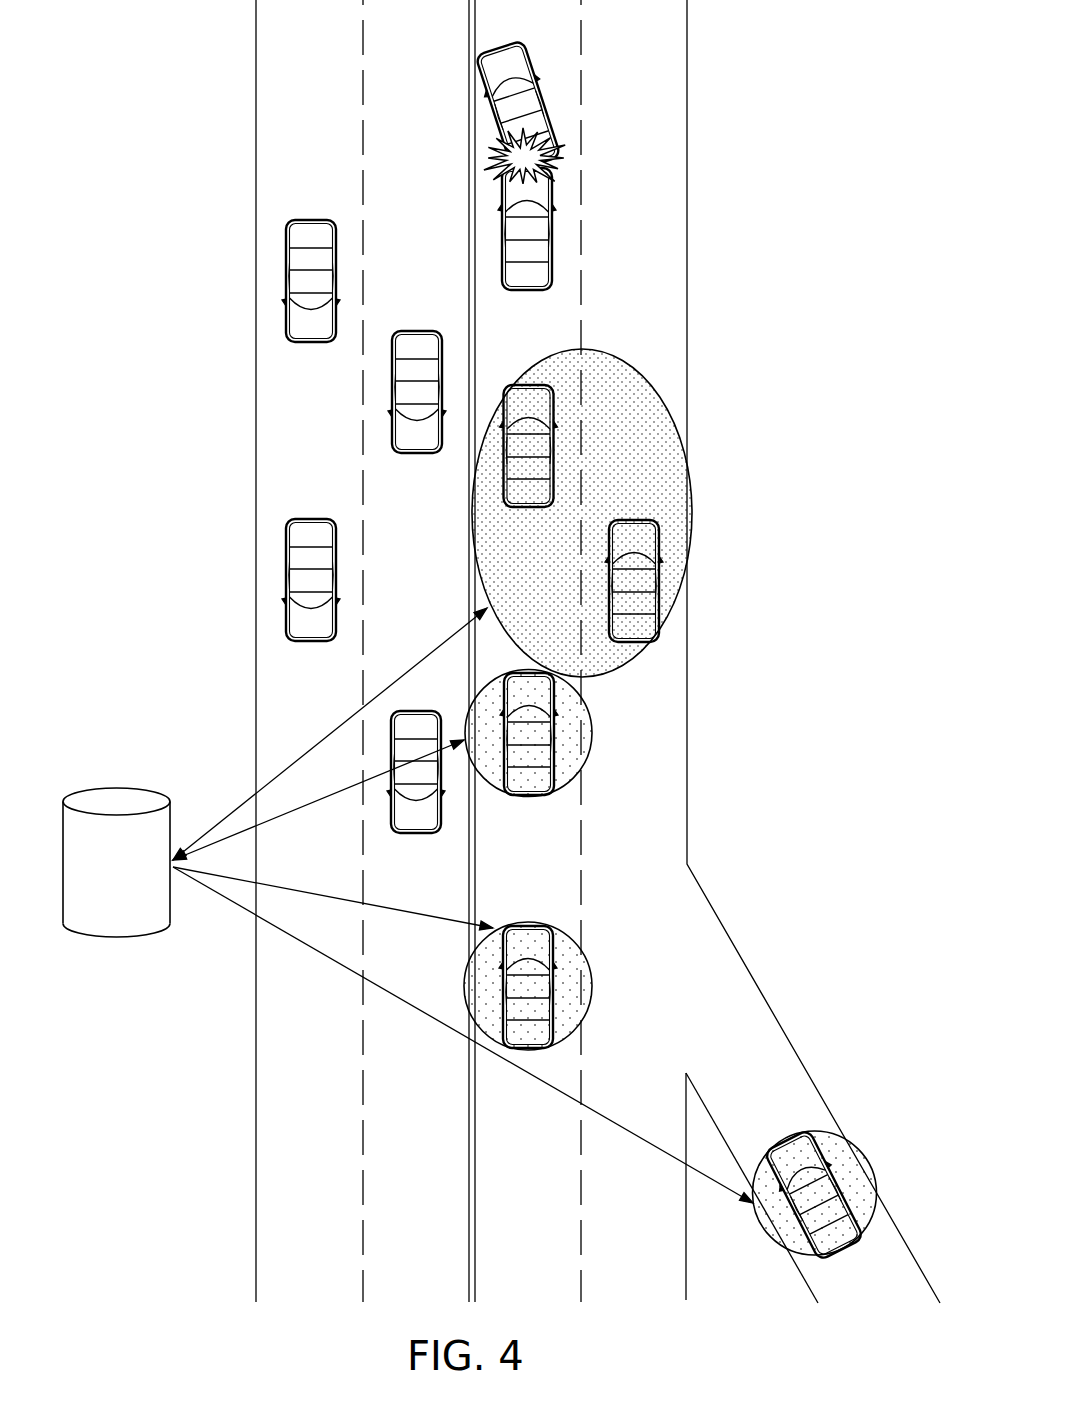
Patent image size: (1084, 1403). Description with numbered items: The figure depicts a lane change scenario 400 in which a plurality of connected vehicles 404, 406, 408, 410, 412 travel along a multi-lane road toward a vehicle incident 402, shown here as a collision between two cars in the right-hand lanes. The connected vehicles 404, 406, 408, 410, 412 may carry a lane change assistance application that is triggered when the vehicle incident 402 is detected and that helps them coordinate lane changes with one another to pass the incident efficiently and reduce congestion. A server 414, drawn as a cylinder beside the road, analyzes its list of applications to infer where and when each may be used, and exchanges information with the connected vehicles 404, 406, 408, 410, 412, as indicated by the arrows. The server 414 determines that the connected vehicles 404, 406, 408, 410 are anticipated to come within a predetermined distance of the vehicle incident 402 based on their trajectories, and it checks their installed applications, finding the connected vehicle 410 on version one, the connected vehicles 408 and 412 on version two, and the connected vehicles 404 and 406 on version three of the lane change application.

The lane change scenario 400 is at (124, 124).
The vehicle incident 402 is at (565, 150).
The connected vehicle 404 is at (524, 386).
The connected vehicle 406 is at (640, 641).
The connected vehicle 408 is at (523, 797).
The connected vehicle 410 is at (527, 925).
The connected vehicle 412 is at (785, 1143).
The server 414 is at (117, 788).